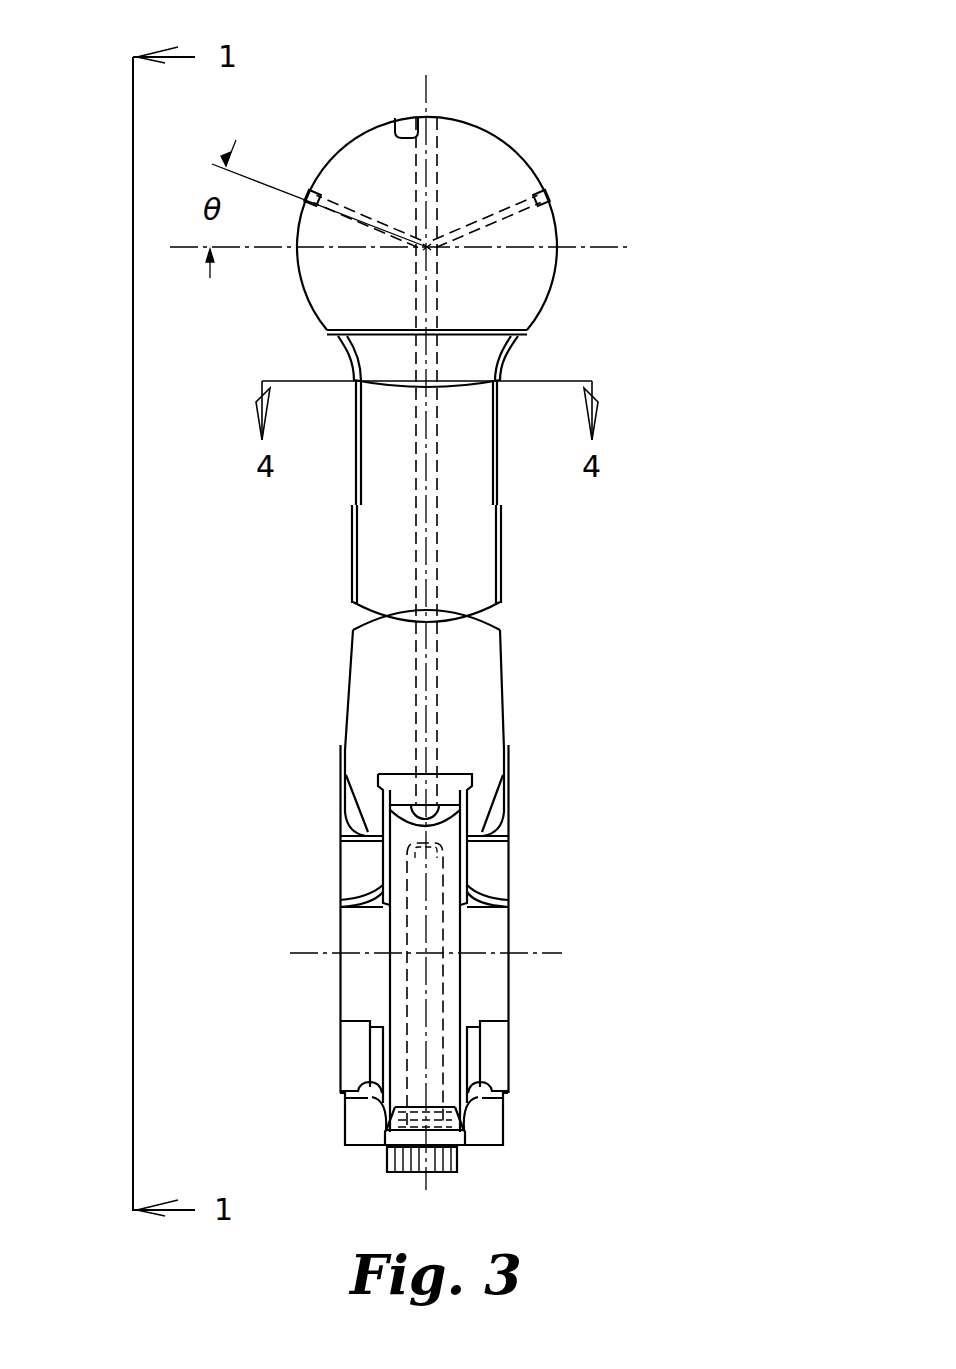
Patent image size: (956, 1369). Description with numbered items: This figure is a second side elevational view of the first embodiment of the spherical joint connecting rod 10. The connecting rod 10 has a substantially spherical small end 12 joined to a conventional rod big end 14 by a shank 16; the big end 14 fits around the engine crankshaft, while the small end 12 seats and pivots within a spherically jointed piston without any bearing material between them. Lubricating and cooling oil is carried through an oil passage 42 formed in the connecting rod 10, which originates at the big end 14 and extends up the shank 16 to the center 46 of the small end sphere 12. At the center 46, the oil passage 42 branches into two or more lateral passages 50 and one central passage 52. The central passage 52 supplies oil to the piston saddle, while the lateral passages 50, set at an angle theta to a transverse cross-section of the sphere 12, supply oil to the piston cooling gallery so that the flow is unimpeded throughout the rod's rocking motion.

The spherical joint connecting rod 10 is at (632, 72).
The spherical small end 12 is at (503, 143).
The rod big end 14 is at (509, 1020).
The shank 16 is at (501, 515).
The oil passage 42 is at (431, 577).
The center of the small end sphere 46 is at (434, 250).
The lateral passages 50 is at (318, 192).
The central passage 52 is at (392, 122).